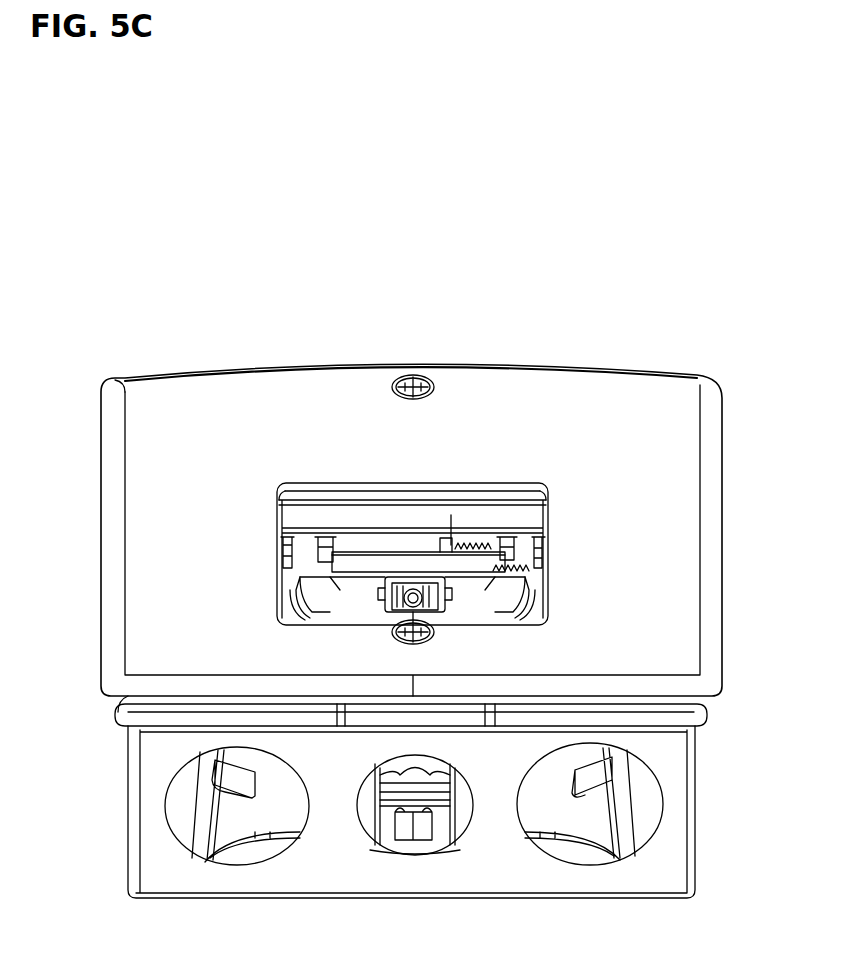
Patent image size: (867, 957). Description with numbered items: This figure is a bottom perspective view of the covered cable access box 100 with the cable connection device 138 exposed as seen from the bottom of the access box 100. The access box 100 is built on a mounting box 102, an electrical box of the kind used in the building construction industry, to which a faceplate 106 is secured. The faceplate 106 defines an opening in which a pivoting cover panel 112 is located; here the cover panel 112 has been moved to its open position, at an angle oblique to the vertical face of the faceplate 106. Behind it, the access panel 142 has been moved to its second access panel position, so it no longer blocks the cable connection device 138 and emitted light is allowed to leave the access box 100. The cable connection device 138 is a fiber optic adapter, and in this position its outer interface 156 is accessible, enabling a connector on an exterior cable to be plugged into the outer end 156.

The access box 100 is at (688, 330).
The faceplate 106 is at (678, 413).
The cover panel 112 is at (485, 515).
The access panel 142 is at (474, 563).
The cable connection device 138 is at (400, 612).
The outer end 156 is at (427, 612).
The mounting box 102 is at (647, 865).